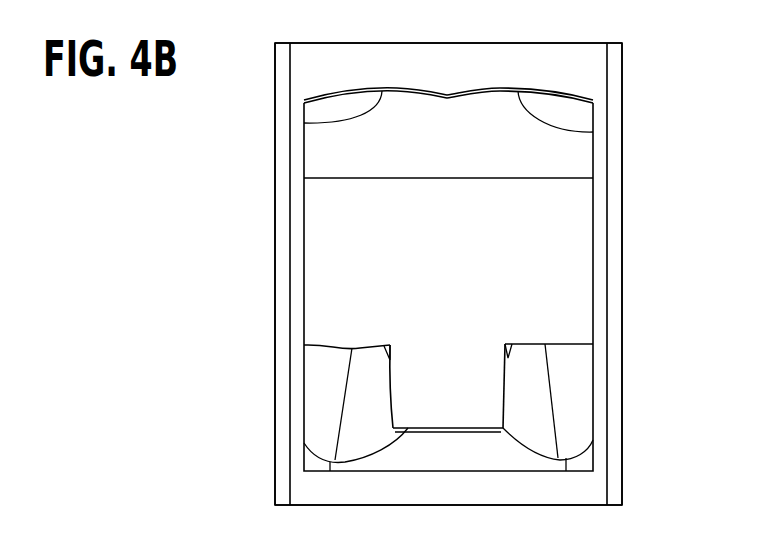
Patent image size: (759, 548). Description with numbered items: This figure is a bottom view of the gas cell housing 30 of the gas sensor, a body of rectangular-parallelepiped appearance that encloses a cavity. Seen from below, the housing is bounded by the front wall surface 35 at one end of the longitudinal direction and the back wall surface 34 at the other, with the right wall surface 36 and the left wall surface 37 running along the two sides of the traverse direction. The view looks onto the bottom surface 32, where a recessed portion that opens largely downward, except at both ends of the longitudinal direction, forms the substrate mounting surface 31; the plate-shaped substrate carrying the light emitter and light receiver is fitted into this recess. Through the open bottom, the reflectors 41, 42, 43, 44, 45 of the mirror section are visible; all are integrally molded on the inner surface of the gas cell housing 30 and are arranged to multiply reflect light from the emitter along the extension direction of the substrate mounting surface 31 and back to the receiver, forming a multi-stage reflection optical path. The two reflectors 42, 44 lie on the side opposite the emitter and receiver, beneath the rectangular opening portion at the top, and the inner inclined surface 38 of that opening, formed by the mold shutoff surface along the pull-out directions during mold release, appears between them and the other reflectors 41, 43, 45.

The gas cell housing 30 is at (624, 192).
The substrate mounting surface 31 is at (578, 60).
The bottom surface 32 is at (283, 81).
The back wall surface 34 is at (310, 505).
The front wall surface 35 is at (330, 43).
The right wall surface 36 is at (622, 228).
The left wall surface 37 is at (275, 250).
The inner inclined surface 38 is at (357, 178).
The reflector 41 is at (360, 400).
The reflector 42 is at (304, 123).
The reflector 43 is at (437, 428).
The reflector 44 is at (593, 132).
The reflector 45 is at (530, 382).